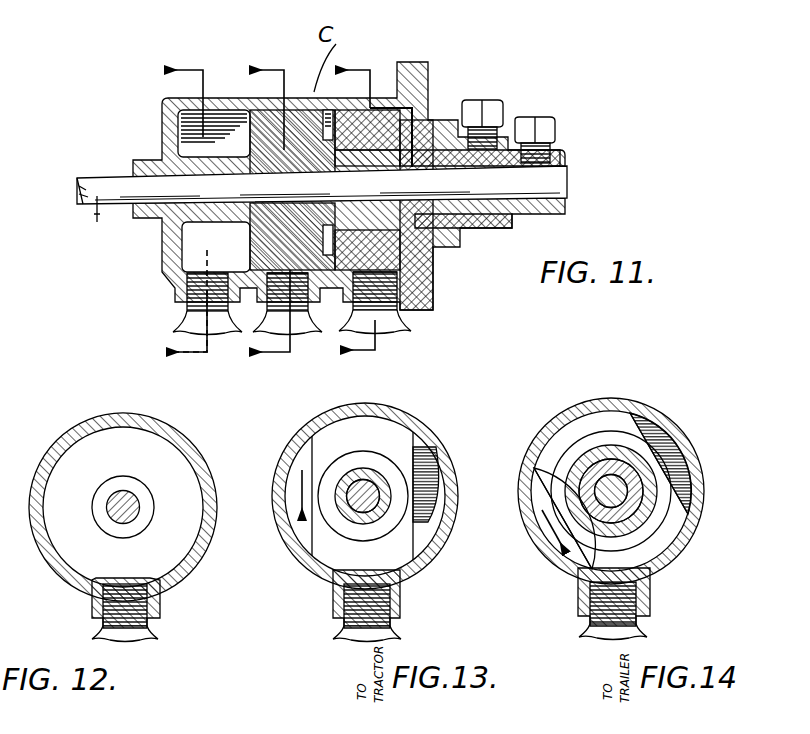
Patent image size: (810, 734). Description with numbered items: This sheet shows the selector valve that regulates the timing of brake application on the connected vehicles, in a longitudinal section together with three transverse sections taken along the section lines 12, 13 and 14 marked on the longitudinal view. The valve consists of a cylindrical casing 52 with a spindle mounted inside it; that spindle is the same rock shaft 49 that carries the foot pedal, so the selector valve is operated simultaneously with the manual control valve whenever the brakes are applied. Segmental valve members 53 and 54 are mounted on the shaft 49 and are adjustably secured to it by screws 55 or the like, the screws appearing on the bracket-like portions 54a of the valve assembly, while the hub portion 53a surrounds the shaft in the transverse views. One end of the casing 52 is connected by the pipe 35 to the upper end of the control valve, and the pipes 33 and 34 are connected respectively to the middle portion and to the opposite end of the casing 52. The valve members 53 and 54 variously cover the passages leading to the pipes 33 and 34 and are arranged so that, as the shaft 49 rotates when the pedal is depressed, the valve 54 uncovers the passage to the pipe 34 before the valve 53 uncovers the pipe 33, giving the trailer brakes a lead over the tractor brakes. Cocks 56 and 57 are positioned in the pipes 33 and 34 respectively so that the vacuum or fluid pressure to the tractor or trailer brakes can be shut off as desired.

In FIG. 11, the section line 12— 12 is at (186, 214).
In FIG. 11, the section line 13— 13 is at (270, 214).
In FIG. 11, the section line 14— 14 is at (356, 214).
In FIG. 11, the pipe 33 is at (295, 331).
In FIG. 11, the pipe 34 is at (384, 326).
In FIG. 11, the pipe 35 is at (180, 327).
In FIG. 11, the rock shaft 49 is at (560, 164).
In FIG. 12, the rock shaft 49 is at (116, 497).
In FIG. 13, the rock shaft 49 is at (345, 488).
In FIG. 14, the rock shaft 49 is at (587, 480).
In FIG. 11, the cylindrical casing 52 is at (160, 102).
In FIG. 12, the cylindrical casing 52 is at (76, 430).
In FIG. 13, the cylindrical casing 52 is at (308, 432).
In FIG. 14, the cylindrical casing 52 is at (583, 412).
In FIG. 11, the segmental valve member 53 is at (267, 150).
In FIG. 13, the segmental valve member 53 is at (332, 558).
In FIG. 14, the segmental valve member 53 is at (670, 440).
In FIG. 11, the valve member hub 53a is at (404, 152).
In FIG. 13, the valve member hub 53a is at (366, 472).
In FIG. 14, the valve member hub 53a is at (617, 470).
In FIG. 11, the segmental valve member 54 is at (362, 143).
In FIG. 14, the segmental valve member 54 is at (604, 562).
In FIG. 11, the end cap bracket 54a is at (452, 150).
In FIG. 14, the end cap bracket 54a is at (590, 452).
In FIG. 11, the screws 55 is at (520, 124).
In FIG. 11, the cock 56 is at (300, 327).
In FIG. 11, the cock 57 is at (380, 325).